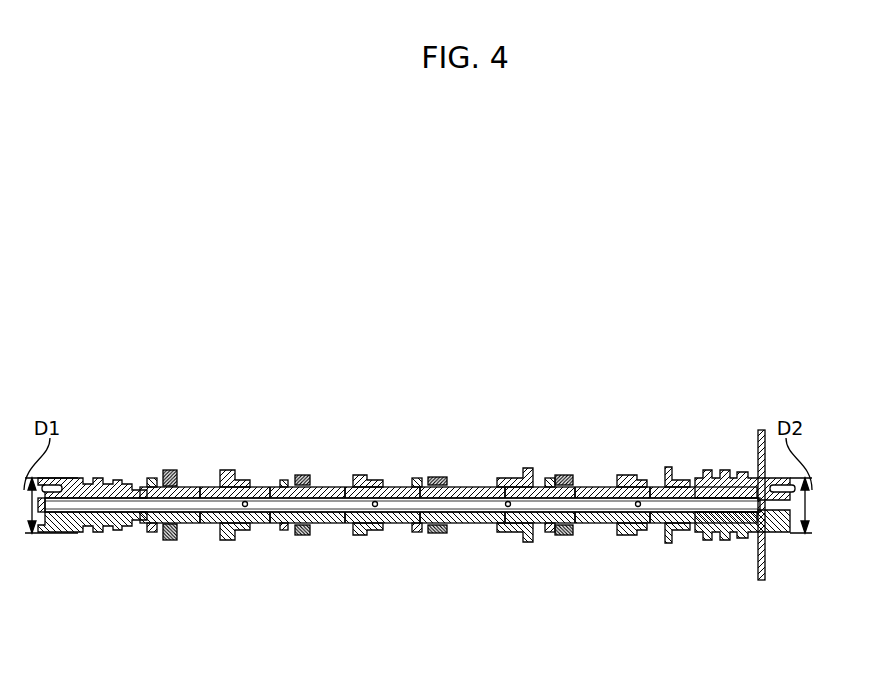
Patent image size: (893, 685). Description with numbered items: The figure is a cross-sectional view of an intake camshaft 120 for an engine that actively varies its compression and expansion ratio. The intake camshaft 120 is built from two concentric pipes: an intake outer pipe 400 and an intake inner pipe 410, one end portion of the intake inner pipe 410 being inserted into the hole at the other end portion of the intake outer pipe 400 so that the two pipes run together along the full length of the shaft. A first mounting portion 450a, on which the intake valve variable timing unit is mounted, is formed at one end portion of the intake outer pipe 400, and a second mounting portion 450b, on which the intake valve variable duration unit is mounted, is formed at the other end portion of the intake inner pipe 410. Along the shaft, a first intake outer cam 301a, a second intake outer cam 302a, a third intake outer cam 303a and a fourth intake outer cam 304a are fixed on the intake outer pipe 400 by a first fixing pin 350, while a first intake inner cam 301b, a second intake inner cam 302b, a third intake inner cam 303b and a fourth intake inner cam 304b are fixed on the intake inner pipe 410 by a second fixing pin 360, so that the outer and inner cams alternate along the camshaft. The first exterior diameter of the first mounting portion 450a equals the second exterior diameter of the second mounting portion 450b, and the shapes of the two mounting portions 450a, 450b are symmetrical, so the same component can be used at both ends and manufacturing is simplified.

The intake camshaft 120 is at (503, 318).
The first fixing pin 350 is at (152, 478).
The second fixing pin 360 is at (252, 479).
The intake outer pipe 400 is at (198, 487).
The intake inner pipe 410 is at (599, 487).
The first intake outer cam 301a is at (170, 540).
The first intake inner cam 301b is at (228, 540).
The second intake outer cam 302a is at (303, 542).
The second intake inner cam 302b is at (370, 543).
The third intake outer cam 303a is at (430, 542).
The third intake inner cam 303b is at (492, 543).
The fourth intake outer cam 304a is at (567, 543).
The fourth intake inner cam 304b is at (652, 540).
The first mounting portion 450a is at (85, 534).
The second mounting portion 450b is at (727, 534).